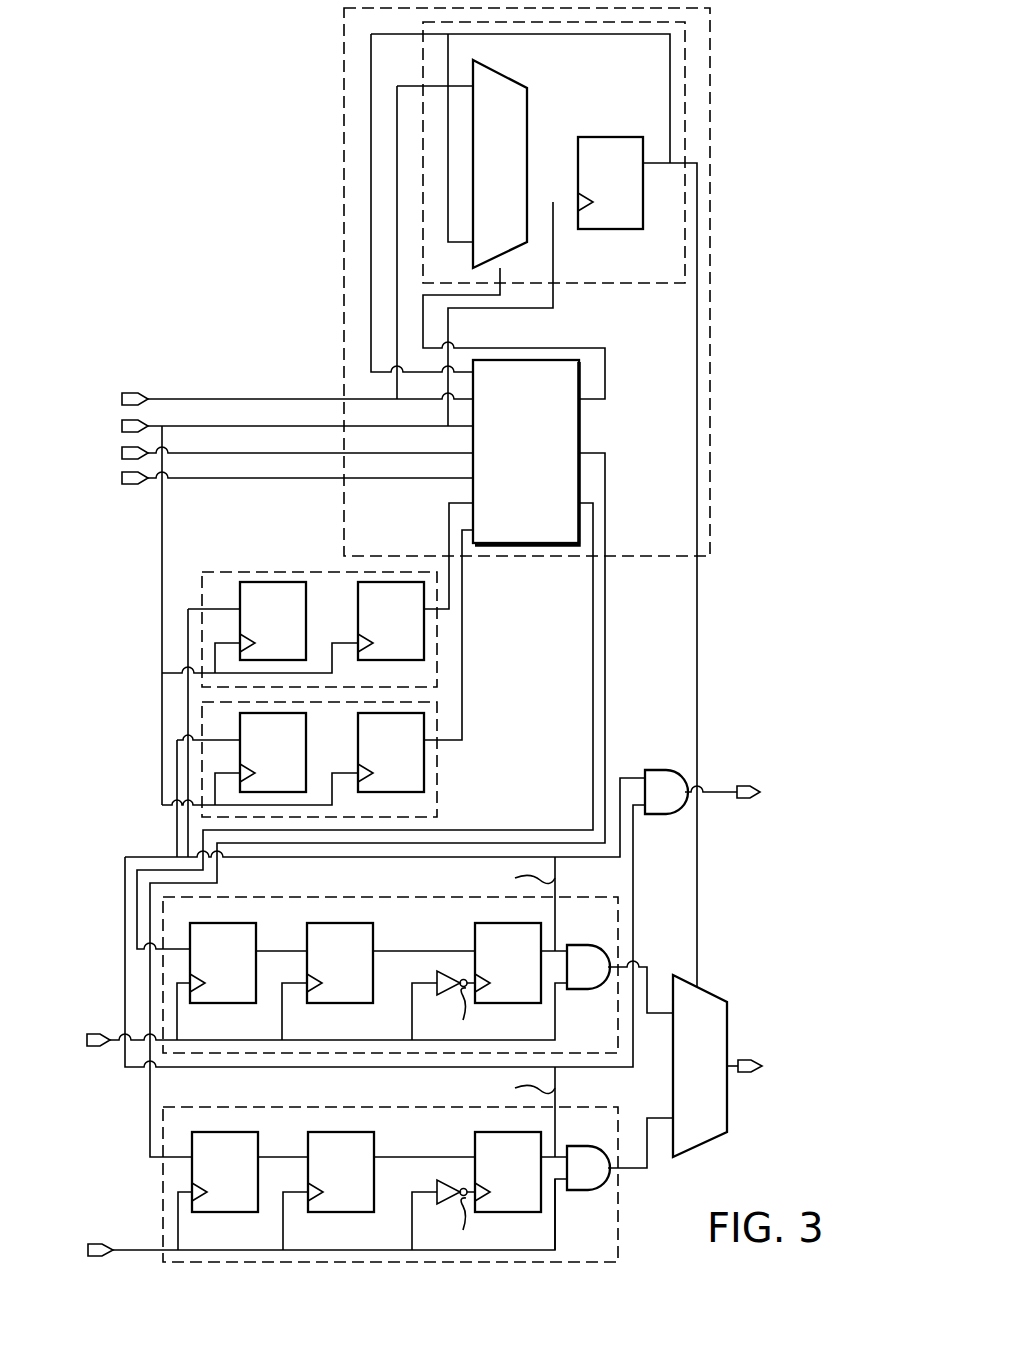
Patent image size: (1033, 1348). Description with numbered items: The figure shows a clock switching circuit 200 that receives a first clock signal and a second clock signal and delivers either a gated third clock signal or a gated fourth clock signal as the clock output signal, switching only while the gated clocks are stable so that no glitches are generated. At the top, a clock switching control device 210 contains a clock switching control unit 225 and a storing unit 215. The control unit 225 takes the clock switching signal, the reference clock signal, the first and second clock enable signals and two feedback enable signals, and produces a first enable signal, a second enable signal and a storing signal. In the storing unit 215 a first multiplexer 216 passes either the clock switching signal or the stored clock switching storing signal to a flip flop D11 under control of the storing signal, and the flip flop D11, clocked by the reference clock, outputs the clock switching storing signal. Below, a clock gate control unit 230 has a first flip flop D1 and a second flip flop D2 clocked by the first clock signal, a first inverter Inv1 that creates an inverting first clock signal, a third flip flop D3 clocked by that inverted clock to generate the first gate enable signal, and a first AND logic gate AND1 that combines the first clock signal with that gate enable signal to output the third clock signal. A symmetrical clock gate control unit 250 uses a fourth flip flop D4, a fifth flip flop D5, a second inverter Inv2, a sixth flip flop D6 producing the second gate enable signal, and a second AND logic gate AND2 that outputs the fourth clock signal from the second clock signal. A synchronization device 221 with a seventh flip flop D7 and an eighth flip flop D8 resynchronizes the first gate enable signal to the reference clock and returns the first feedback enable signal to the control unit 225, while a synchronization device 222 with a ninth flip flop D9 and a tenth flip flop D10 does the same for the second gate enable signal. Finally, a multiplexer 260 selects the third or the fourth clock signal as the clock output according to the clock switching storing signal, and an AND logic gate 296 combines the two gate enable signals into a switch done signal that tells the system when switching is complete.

The clock switching circuit 200 is at (183, 62).
The clock switching control device 210 is at (710, 58).
The multiplexer select hold block 215 is at (685, 98).
The first multiplexer 216 is at (504, 73).
The clock switching control unit 225 is at (579, 422).
The synchronization device 221 is at (202, 583).
The synchronization device 222 is at (202, 713).
The clock gate control unit 230 is at (163, 985).
The clock gate control unit 250 is at (165, 1196).
The multiplexer 260 is at (712, 994).
The AND logic gate 296 is at (668, 770).
The first flip flop D1 is at (205, 923).
The second flip flop D2 is at (322, 923).
The third flip flop D3 is at (490, 923).
The fourth flip flop D4 is at (205, 1132).
The fifth flip flop D5 is at (322, 1132).
The sixth flip flop D6 is at (490, 1132).
The seventh flip flop D7 is at (240, 625).
The eighth flip flop D8 is at (424, 650).
The ninth flip flop D9 is at (240, 755).
The tenth flip flop D10 is at (424, 772).
The flip flop D11 is at (596, 137).
The first AND logic gate AND1 is at (585, 956).
The second AND logic gate AND2 is at (585, 1162).
The first inverter Inv1 is at (442, 975).
The second inverter Inv2 is at (442, 1184).